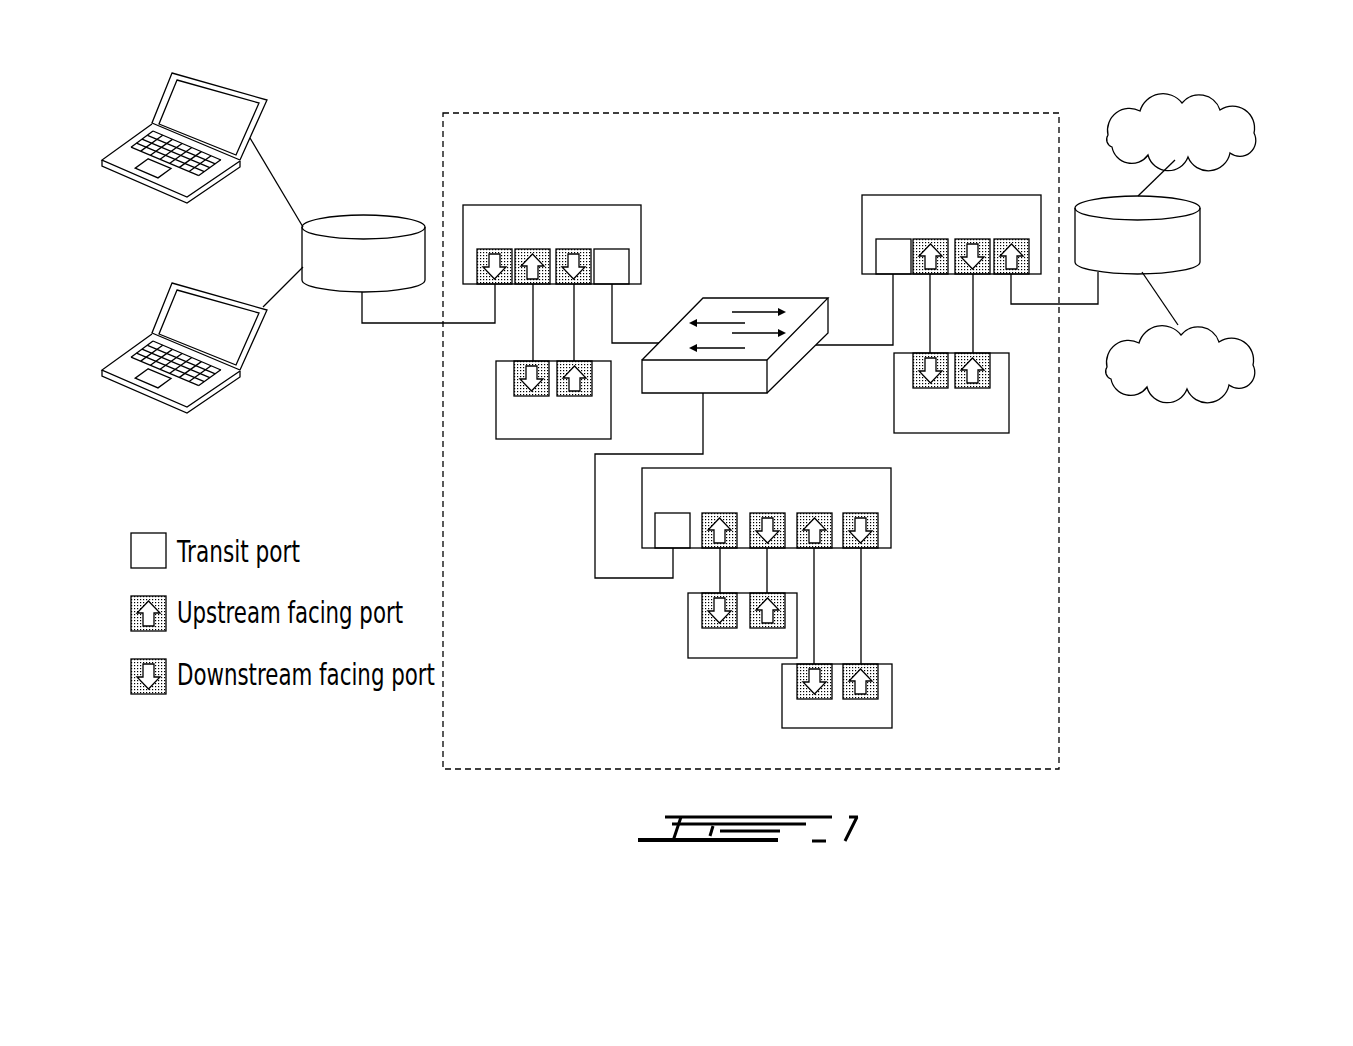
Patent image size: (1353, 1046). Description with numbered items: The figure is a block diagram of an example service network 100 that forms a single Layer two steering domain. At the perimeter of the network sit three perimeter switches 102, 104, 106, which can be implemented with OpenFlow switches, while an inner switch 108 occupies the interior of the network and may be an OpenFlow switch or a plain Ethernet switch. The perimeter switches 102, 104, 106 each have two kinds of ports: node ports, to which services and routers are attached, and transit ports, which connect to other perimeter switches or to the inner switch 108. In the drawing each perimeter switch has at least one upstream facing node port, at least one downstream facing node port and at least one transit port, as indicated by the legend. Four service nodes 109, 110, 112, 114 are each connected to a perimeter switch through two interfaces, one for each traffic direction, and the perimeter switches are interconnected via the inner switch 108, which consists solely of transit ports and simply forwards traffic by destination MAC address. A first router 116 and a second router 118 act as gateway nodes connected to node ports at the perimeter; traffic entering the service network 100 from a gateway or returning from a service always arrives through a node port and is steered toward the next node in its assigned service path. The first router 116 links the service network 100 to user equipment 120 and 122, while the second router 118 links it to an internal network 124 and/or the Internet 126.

The service network 100 is at (1060, 728).
The perimeter switch PS1 102 is at (641, 218).
The perimeter switch PS2 104 is at (873, 503).
The perimeter switch PS3 106 is at (888, 213).
The inner switch SW1 108 is at (752, 303).
The service node S1 109 is at (512, 427).
The service node S2 110 is at (703, 645).
The service node S3 112 is at (878, 710).
The service node S4 114 is at (990, 417).
The router R1 116 is at (360, 220).
The router R2 118 is at (1200, 237).
The user equipment 120 is at (233, 103).
The user equipment 122 is at (218, 385).
The internal network 124 is at (1258, 112).
The Internet 126 is at (1178, 385).